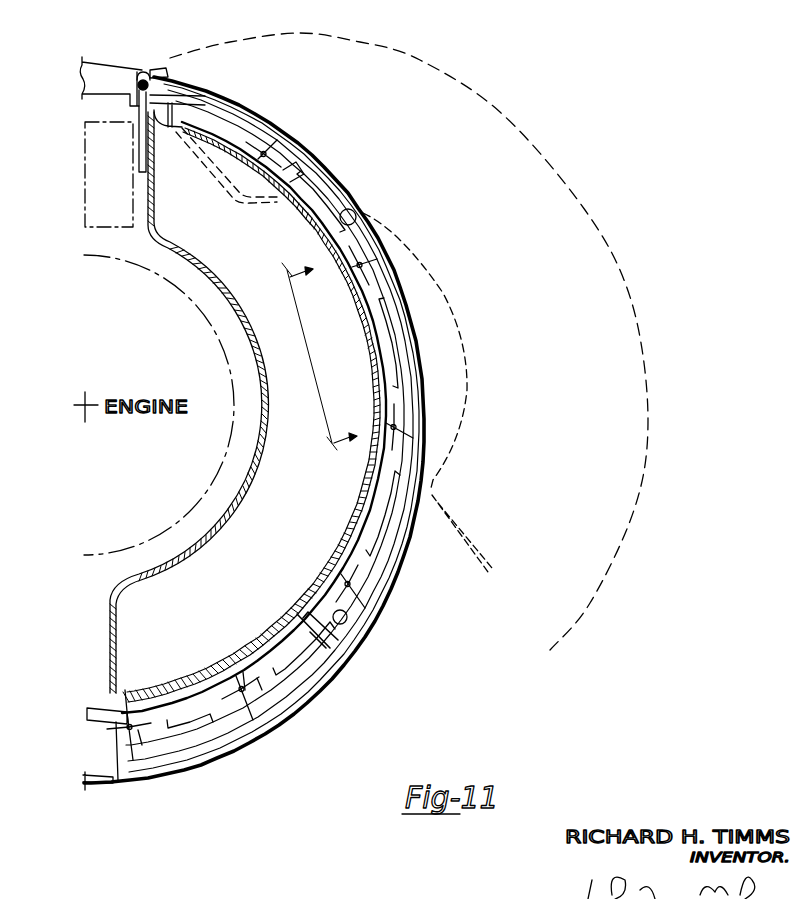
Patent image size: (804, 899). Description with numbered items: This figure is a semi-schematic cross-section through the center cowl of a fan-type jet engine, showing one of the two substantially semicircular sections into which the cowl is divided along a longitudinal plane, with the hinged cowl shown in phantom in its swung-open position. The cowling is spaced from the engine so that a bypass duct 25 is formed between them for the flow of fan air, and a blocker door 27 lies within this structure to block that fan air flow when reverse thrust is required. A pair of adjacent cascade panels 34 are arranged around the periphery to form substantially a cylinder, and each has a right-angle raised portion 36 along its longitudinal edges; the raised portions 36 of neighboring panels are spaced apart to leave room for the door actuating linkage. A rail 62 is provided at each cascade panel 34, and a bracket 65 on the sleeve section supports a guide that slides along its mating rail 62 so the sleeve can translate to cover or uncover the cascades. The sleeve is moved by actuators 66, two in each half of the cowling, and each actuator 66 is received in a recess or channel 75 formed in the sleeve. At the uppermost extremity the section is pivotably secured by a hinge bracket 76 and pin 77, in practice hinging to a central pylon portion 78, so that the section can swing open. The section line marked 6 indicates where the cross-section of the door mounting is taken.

The section line 6- 6 is at (320, 356).
The bypass duct 25 is at (265, 572).
The blocker door 27 is at (300, 172).
The cascade panel 34 is at (296, 613).
The right-angle raised portion 36 is at (334, 632).
The rail 62 is at (128, 724).
The bracket 65 is at (142, 735).
The actuator 66 is at (348, 624).
The recess or channel 75 is at (352, 632).
The hinge bracket 76 is at (140, 80).
The pin 77 is at (154, 68).
The central pylon portion 78 is at (99, 70).